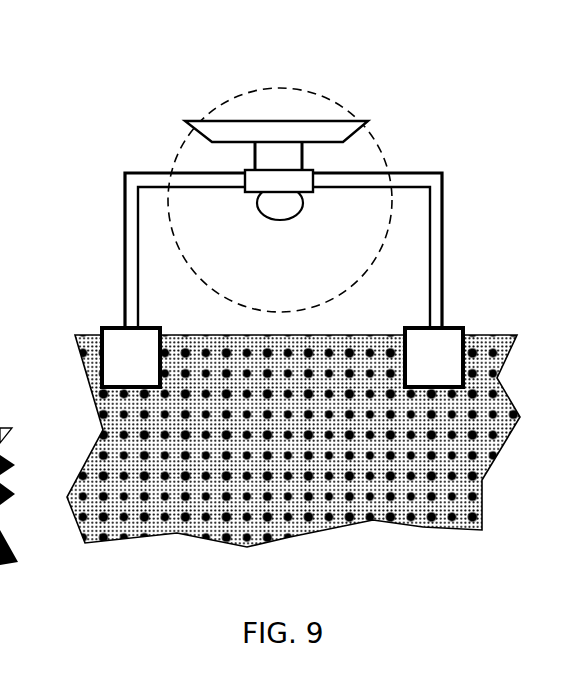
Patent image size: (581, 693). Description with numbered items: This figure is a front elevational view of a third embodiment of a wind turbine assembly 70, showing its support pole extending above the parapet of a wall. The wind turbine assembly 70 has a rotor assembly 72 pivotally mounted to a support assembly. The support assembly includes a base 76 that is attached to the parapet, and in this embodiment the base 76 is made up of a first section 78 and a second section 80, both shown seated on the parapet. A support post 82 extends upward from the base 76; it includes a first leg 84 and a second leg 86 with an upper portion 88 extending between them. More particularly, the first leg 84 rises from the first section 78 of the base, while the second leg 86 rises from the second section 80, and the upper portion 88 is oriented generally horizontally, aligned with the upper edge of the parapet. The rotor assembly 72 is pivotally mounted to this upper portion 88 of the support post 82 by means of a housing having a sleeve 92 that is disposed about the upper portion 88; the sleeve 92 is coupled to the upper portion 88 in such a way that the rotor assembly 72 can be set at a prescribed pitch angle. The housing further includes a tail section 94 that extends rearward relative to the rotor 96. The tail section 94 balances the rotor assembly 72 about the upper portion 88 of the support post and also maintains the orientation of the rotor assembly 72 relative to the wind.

The wind turbine assembly 70 is at (473, 49).
The rotor assembly 72 is at (225, 192).
The base 76 is at (86, 358).
The first section 78 is at (437, 380).
The second section 80 is at (128, 380).
The support post 82 is at (261, 285).
The first leg 84 is at (440, 270).
The second leg 86 is at (117, 290).
The upper portion 88 is at (409, 186).
The sleeve 92 is at (311, 170).
The tail section 94 is at (349, 134).
The rotor 96 is at (187, 137).